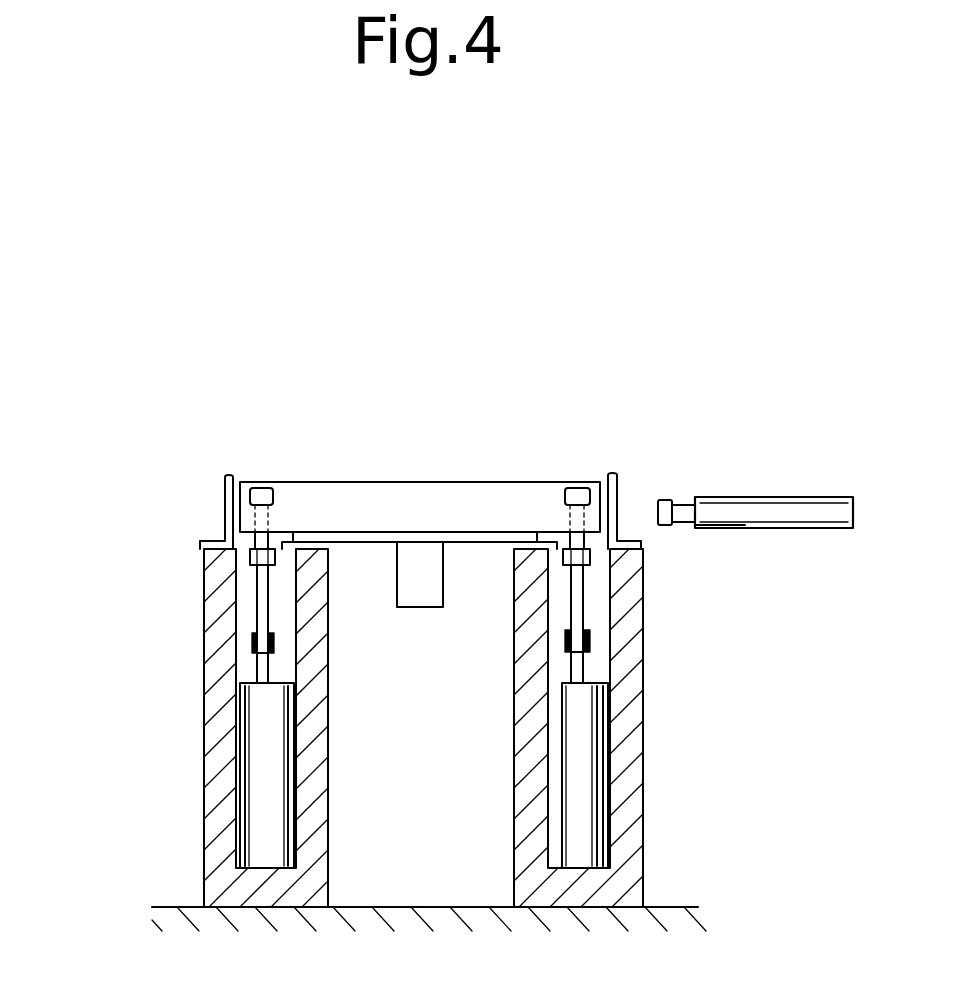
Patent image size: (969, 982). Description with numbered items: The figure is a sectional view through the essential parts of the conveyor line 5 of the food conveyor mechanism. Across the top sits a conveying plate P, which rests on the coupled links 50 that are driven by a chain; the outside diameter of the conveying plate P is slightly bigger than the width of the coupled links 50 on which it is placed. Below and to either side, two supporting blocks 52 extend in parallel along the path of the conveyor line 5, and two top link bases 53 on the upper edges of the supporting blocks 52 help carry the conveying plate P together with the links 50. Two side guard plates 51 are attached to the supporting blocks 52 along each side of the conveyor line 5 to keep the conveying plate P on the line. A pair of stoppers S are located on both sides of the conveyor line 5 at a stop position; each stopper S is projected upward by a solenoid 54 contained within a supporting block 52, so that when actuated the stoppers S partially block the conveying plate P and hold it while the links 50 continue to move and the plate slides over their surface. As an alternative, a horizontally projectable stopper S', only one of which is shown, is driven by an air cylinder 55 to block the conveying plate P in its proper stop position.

The conveyor line 5 is at (288, 380).
The coupled links 50 is at (410, 582).
The side guard plates 51 is at (225, 510).
The supporting blocks 52 is at (228, 832).
The top link bases 53 is at (292, 538).
The solenoid 54 is at (262, 742).
The air cylinder 55 is at (750, 528).
The conveying plate P is at (432, 480).
The stopper S is at (402, 521).
The stopper S' is at (726, 441).